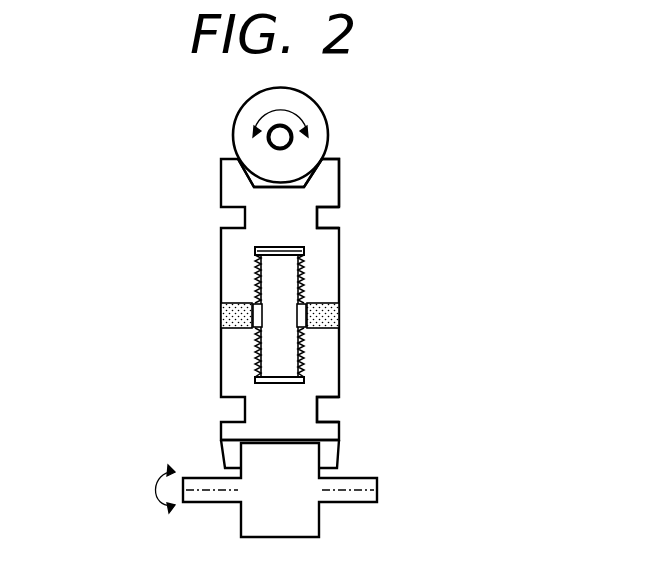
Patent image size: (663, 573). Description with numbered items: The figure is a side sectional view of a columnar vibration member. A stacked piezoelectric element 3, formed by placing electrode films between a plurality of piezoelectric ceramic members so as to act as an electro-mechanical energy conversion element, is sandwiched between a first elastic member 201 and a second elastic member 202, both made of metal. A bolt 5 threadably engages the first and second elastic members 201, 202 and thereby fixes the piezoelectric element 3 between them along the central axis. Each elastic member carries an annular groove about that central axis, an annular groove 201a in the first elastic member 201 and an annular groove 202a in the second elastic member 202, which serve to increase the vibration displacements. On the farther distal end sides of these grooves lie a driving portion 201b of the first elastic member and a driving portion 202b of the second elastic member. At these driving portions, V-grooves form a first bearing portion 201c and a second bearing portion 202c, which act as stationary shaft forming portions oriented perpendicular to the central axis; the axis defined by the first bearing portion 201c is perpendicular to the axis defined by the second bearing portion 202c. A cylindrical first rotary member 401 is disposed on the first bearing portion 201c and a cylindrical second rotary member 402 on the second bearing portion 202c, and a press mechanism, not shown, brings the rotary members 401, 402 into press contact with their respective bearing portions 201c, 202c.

The first elastic member 201 is at (232, 253).
The annular groove 201a is at (322, 216).
The driving portion 201b is at (331, 187).
The first bearing portion 201c is at (248, 174).
The second elastic member 202 is at (330, 383).
The annular groove 202a is at (323, 407).
The driving portion 202b is at (330, 450).
The second bearing portion 202c is at (252, 440).
The first rotary member 401 is at (328, 133).
The second rotary member 402 is at (370, 490).
The bolt 5 is at (287, 278).
The piezoelectric element 3 is at (328, 317).